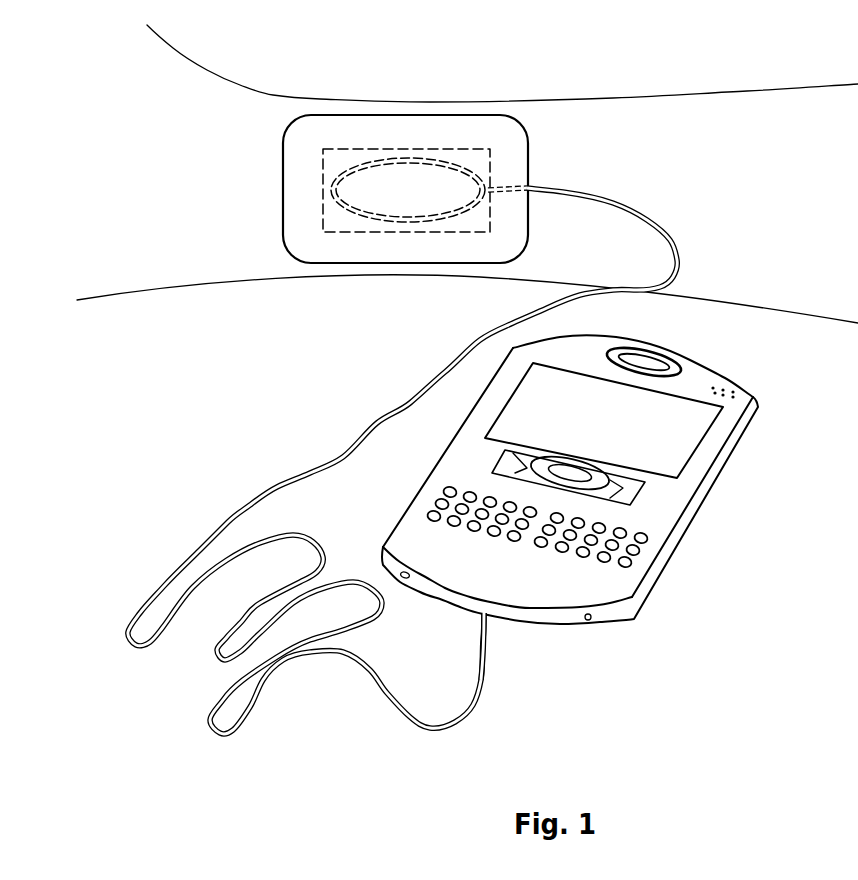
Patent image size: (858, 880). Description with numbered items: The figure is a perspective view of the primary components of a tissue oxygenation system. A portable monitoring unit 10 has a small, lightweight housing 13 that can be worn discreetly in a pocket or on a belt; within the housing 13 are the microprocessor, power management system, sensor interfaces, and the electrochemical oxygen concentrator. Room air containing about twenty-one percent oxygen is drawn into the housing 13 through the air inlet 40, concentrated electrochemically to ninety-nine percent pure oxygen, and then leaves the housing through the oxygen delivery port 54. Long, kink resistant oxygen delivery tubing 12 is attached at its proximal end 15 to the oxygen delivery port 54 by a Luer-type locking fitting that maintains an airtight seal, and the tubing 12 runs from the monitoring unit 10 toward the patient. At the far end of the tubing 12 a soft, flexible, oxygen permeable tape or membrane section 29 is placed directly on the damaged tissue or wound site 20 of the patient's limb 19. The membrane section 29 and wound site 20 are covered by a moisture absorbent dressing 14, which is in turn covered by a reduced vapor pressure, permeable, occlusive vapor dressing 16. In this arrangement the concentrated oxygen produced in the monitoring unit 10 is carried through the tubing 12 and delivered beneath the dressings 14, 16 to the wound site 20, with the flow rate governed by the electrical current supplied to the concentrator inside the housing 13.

The monitoring unit 10 is at (596, 496).
The oxygen delivery tubing 12 is at (650, 210).
The housing 13 is at (755, 394).
The moisture absorbent dressing 14 is at (475, 160).
The proximal end 15 is at (490, 635).
The vapor dressing 16 is at (527, 170).
The limb 19 is at (797, 139).
The wound site 20 is at (360, 162).
The membrane section 29 is at (348, 196).
The air inlet 40 is at (713, 388).
The oxygen delivery port 54 is at (593, 620).